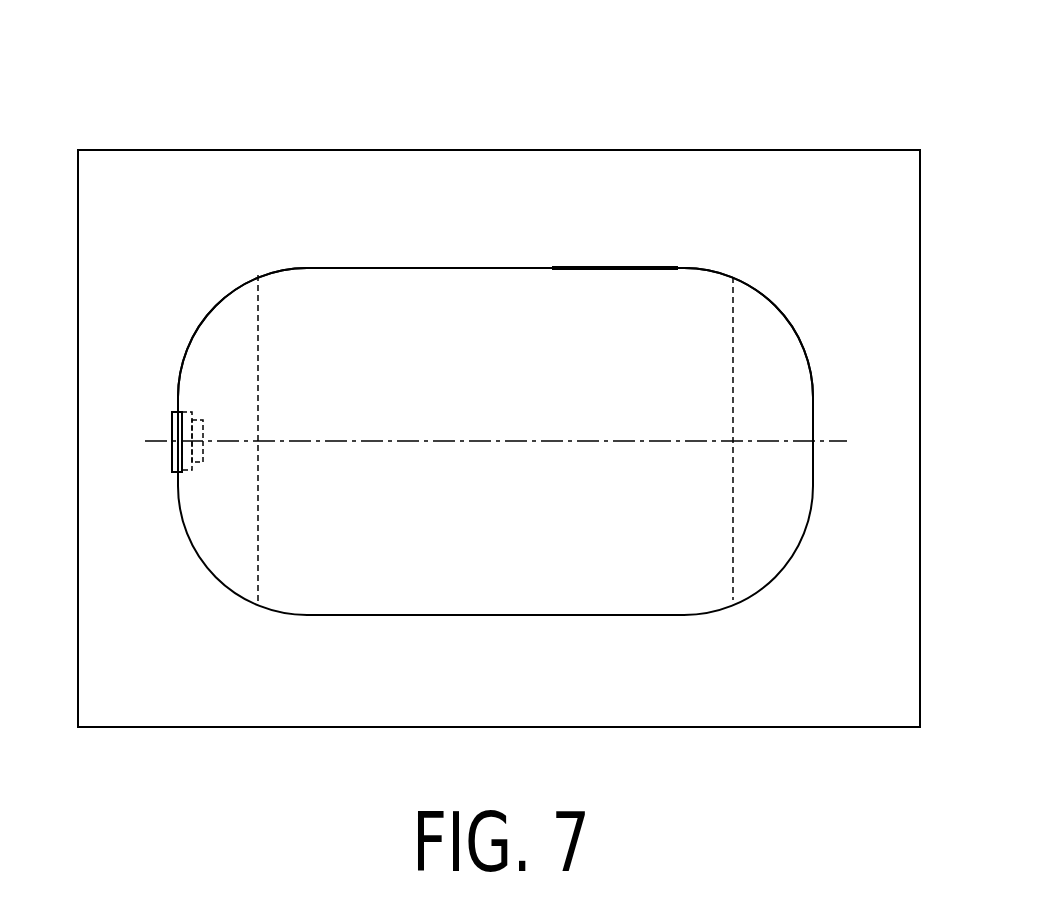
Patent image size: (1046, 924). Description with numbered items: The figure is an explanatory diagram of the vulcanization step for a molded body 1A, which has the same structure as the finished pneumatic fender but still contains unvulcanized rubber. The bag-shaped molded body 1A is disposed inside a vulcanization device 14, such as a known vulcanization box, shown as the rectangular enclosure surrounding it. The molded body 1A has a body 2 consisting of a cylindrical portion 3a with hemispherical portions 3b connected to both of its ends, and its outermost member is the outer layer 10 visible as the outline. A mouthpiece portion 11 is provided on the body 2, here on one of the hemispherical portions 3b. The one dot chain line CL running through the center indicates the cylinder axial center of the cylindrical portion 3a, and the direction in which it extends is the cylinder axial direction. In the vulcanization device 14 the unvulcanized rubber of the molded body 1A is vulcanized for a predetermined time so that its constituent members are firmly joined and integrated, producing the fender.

The vulcanization device 14 is at (371, 149).
The outer layer 10 is at (497, 603).
The cylindrical portion 3a is at (448, 282).
The hemispherical portions 3b is at (225, 316).
The body 2 is at (552, 266).
The molded body 1A is at (680, 267).
The mouthpiece portion 11 is at (172, 430).
The one dot chain line CL is at (828, 438).